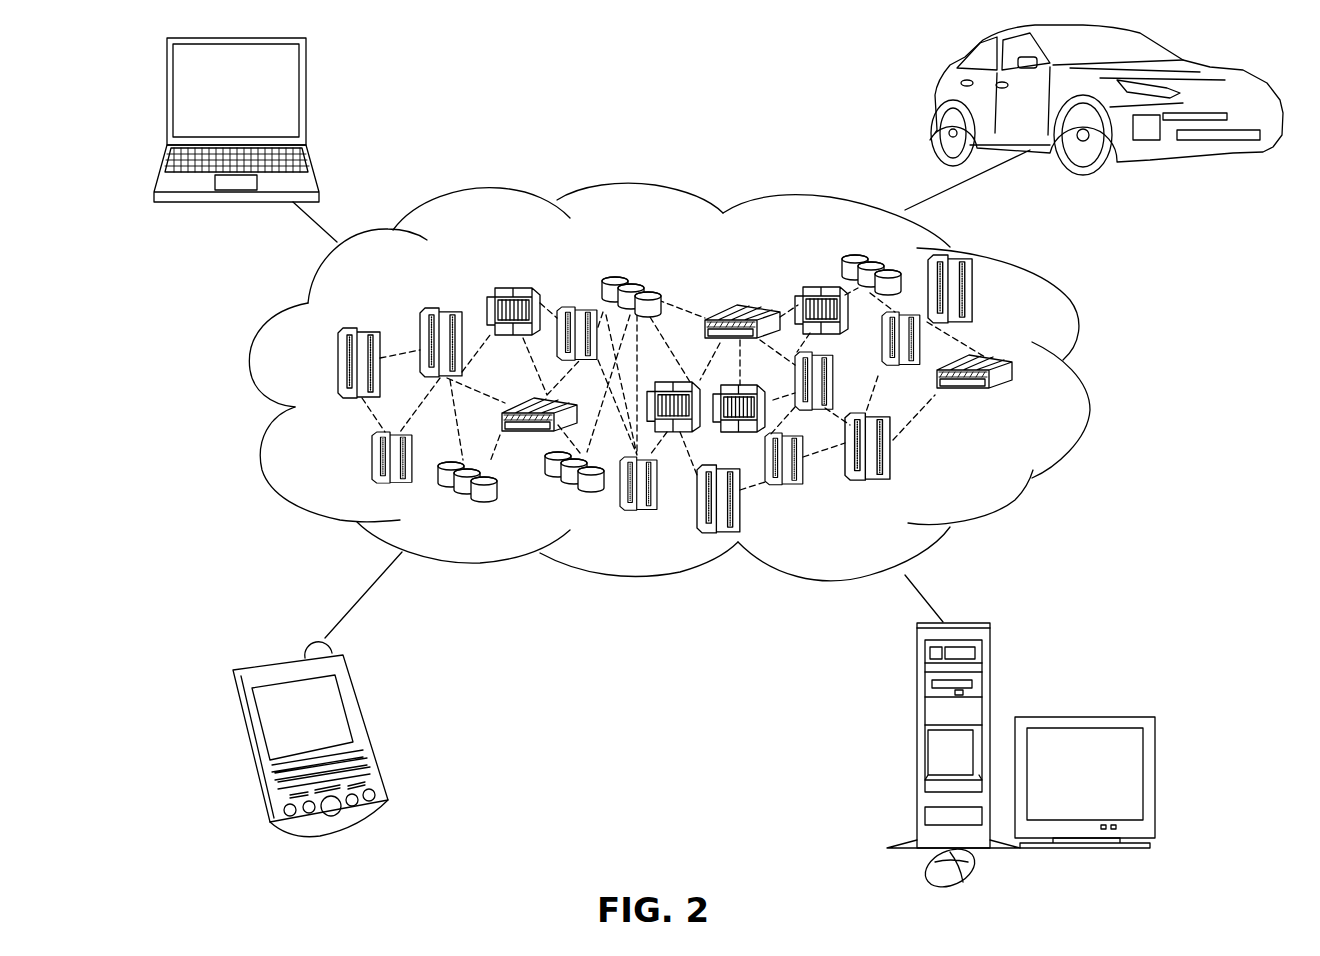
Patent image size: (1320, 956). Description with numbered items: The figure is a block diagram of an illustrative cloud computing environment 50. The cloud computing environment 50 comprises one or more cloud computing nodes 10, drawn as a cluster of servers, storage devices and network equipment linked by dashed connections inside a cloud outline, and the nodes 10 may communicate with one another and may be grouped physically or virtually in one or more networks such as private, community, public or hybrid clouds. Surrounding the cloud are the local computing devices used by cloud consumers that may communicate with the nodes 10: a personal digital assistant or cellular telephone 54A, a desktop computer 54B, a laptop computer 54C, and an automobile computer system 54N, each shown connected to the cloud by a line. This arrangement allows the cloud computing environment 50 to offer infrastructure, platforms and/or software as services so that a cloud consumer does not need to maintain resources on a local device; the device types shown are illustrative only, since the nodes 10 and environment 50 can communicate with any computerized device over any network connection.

The cloud computing nodes 10 is at (990, 473).
The cloud computing environment 50 is at (1080, 377).
The personal digital assistant or cellular telephone 54A is at (357, 698).
The desktop computer 54B is at (917, 680).
The laptop computer 54C is at (306, 73).
The automobile computer system 54N is at (932, 92).